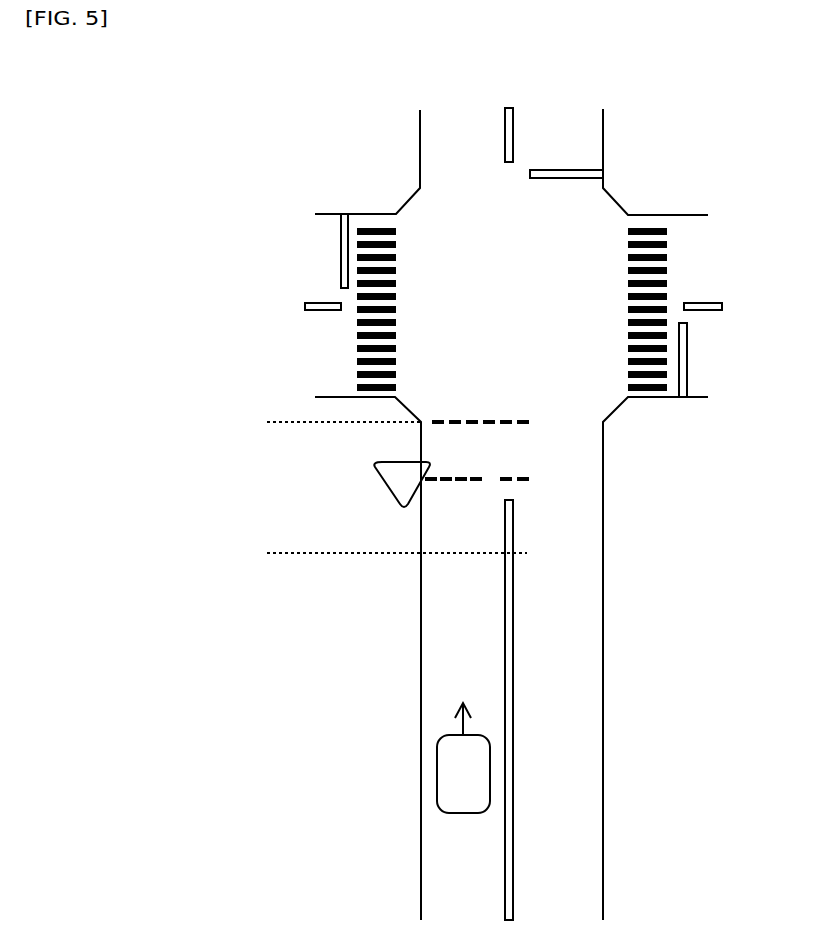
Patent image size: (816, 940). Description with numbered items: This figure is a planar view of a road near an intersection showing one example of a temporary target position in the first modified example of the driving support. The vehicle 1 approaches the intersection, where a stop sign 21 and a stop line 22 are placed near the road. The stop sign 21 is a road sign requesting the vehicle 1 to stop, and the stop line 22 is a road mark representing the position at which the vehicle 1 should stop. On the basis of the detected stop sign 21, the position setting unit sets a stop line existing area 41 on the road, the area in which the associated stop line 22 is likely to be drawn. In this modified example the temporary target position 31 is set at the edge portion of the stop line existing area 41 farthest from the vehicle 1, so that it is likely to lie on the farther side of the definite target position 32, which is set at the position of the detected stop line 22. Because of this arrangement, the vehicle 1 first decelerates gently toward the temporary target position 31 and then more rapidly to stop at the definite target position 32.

The vehicle 1 is at (437, 768).
The stop sign 21 is at (383, 488).
The stop line 22 is at (446, 483).
The temporary target position 31 is at (432, 422).
The definite target position 32 is at (517, 477).
The stop line existing area 41 is at (292, 422).